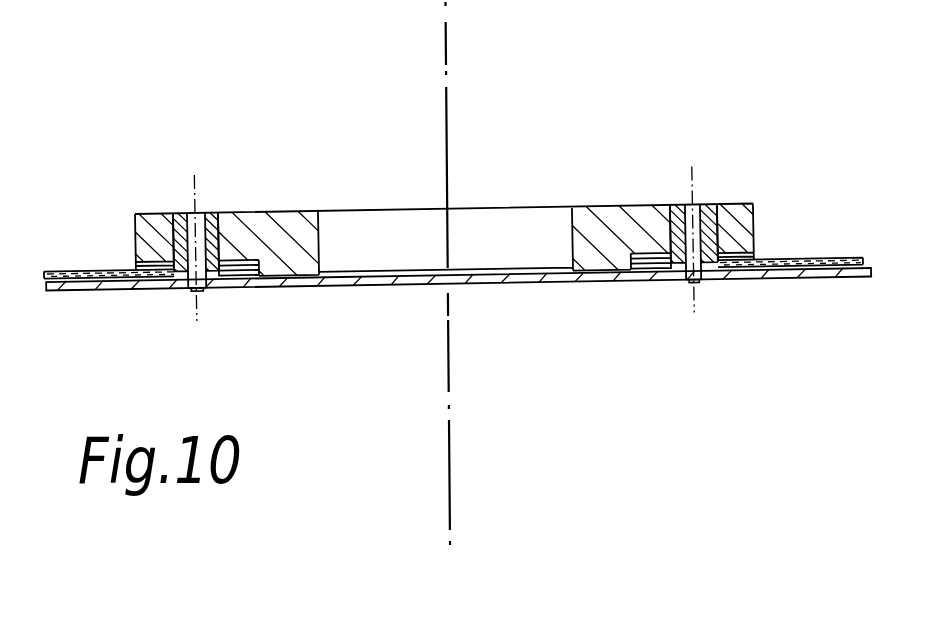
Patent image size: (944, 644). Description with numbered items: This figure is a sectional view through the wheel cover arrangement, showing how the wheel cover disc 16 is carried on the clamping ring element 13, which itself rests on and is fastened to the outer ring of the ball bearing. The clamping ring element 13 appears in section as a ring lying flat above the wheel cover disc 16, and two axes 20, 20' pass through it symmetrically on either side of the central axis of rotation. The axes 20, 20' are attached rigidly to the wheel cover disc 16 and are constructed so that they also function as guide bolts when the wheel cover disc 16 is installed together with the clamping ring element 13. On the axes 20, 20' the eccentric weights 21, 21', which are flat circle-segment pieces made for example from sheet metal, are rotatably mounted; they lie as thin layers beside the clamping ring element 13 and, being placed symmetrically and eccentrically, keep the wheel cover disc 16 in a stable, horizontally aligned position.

The clamping ring element 13 is at (613, 232).
The wheel cover disc 16 is at (620, 278).
The axis 20 is at (222, 216).
The axis 20' is at (734, 207).
The eccentric weight 21 is at (109, 195).
The eccentric weight 21' is at (811, 184).